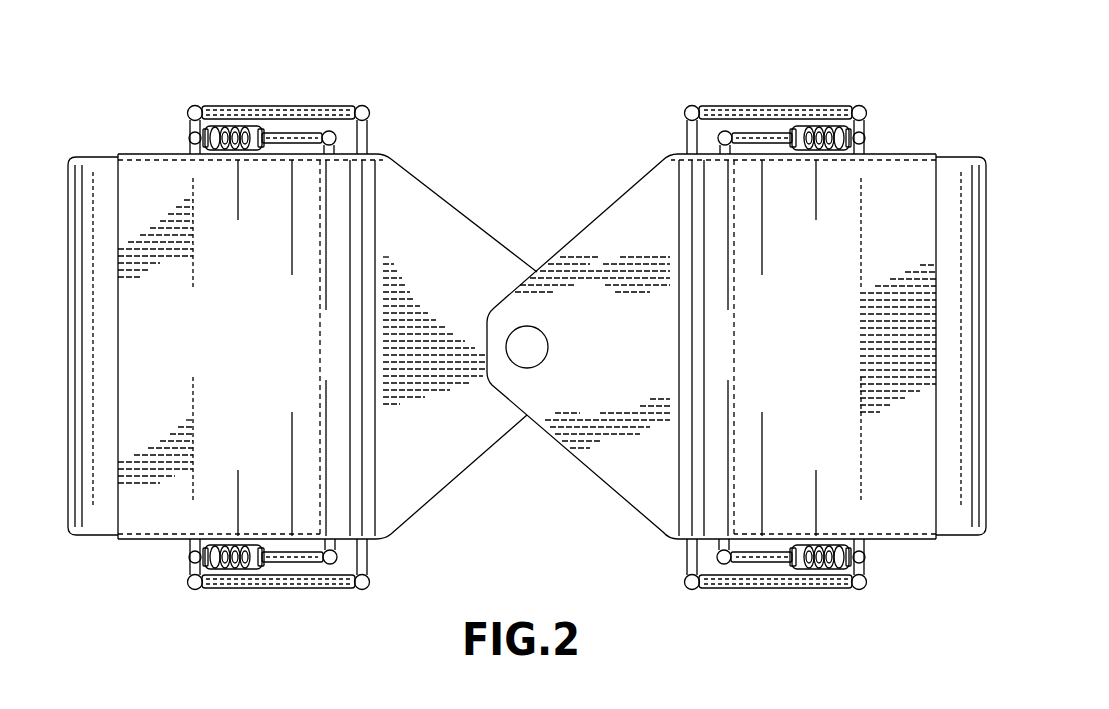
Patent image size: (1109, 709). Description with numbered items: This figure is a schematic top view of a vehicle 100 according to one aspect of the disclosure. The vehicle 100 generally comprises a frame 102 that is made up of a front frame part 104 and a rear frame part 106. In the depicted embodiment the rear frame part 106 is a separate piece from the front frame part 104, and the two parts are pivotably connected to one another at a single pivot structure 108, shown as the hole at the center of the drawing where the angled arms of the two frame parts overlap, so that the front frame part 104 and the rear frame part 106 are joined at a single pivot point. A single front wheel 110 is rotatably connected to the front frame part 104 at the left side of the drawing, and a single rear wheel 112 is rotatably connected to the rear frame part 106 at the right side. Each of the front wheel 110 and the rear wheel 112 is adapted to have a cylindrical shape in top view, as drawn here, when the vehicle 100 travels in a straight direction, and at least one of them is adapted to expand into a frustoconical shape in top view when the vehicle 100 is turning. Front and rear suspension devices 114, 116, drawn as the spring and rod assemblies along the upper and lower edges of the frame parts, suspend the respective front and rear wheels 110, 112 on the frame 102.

The vehicle 100 is at (900, 105).
The frame 102 is at (610, 165).
The front frame part 104 is at (442, 490).
The rear frame part 106 is at (620, 501).
The pivot structure 108 is at (528, 340).
The front wheel 110 is at (90, 157).
The rear wheel 112 is at (960, 537).
The front suspension device 114 is at (278, 586).
The rear suspension device 116 is at (797, 586).